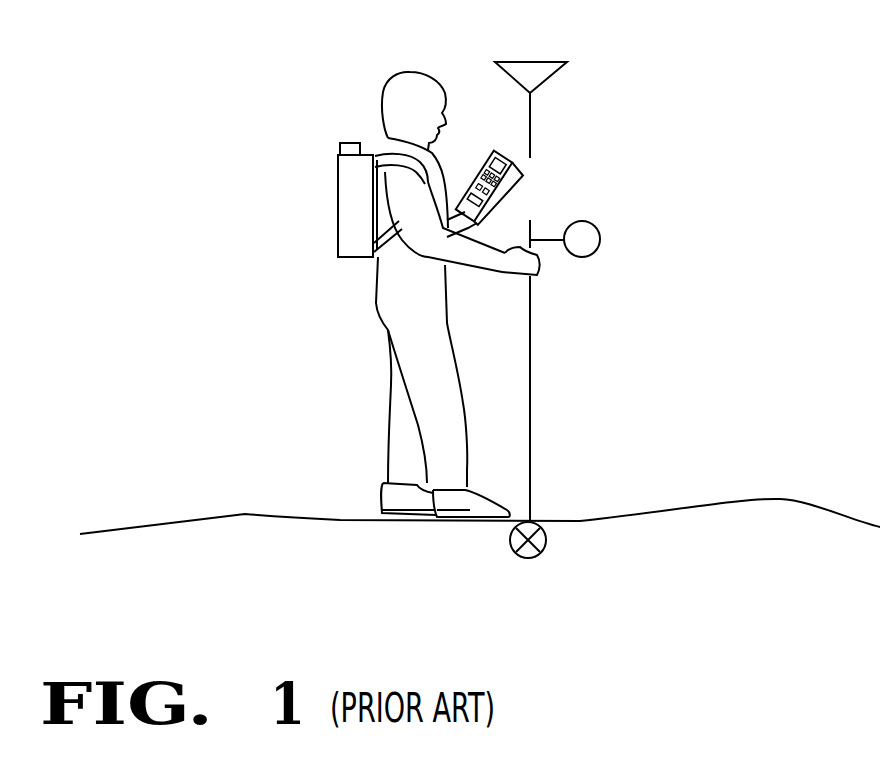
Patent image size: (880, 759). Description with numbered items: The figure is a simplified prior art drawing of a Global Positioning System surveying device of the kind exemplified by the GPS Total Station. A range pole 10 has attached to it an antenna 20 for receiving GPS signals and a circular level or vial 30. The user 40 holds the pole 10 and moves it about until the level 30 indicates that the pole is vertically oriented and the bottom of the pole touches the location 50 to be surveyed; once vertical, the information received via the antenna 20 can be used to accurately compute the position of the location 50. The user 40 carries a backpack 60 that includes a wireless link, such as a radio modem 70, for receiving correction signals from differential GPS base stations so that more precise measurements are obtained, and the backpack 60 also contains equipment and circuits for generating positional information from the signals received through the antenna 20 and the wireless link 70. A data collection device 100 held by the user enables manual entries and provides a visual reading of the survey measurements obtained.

The range pole 10 is at (532, 135).
The antenna 20 is at (550, 60).
The circular level or vial 30 is at (603, 228).
The user 40 is at (348, 316).
The location to be surveyed 50 is at (548, 540).
The backpack 60 is at (337, 212).
The radio modem 70 is at (338, 146).
The data collection device 100 is at (505, 153).